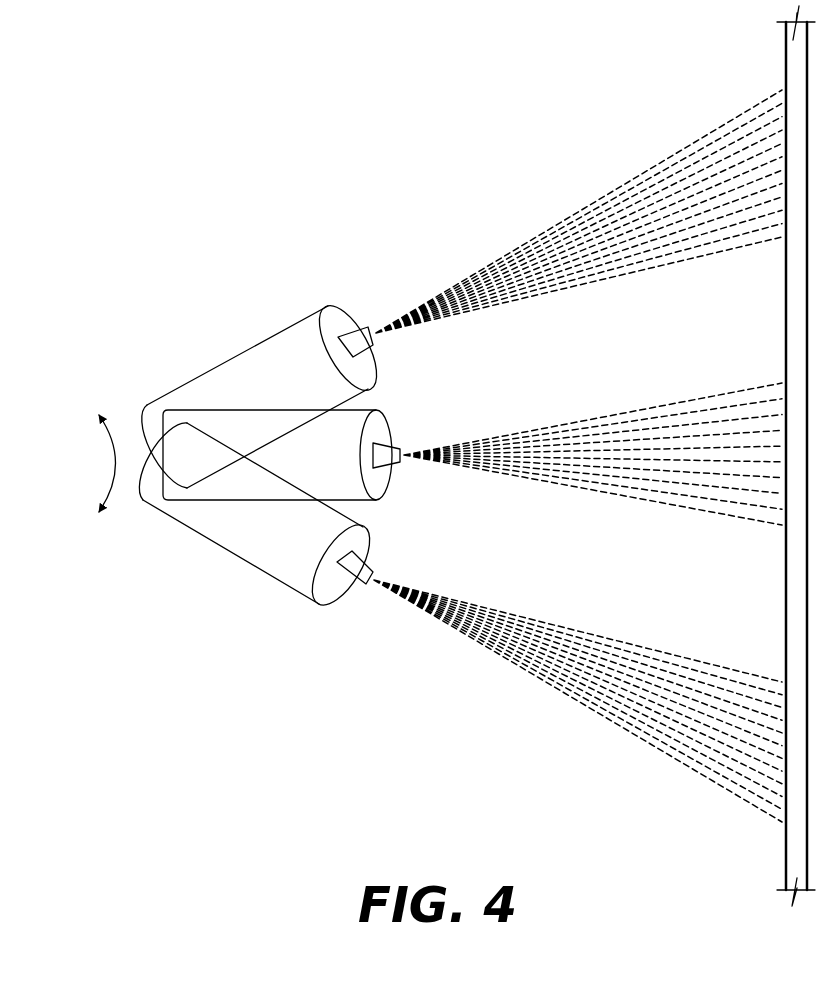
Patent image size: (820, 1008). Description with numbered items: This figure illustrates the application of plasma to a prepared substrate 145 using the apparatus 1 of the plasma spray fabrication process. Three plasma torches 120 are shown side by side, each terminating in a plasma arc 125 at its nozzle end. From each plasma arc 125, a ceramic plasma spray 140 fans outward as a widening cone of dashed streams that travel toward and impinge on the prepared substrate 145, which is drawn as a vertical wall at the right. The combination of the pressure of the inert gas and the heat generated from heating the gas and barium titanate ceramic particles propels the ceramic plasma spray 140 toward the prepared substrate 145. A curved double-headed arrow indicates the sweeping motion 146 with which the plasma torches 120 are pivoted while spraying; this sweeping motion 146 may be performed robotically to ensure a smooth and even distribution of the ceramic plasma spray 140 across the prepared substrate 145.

The apparatus 1 is at (220, 340).
The plasma torch 120 is at (227, 480).
The plasma arc 125 is at (350, 572).
The ceramic plasma spray 140 is at (586, 691).
The prepared substrate 145 is at (786, 60).
The sweeping motion 146 is at (122, 462).